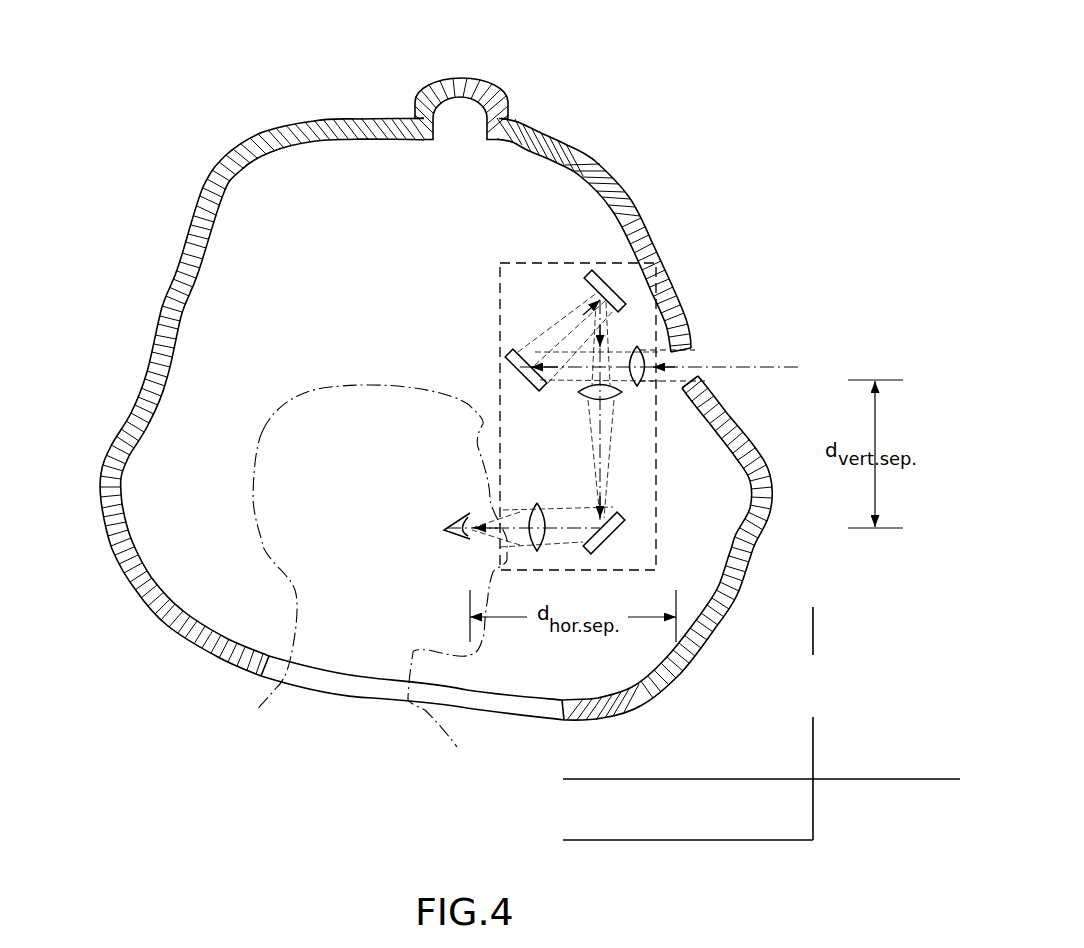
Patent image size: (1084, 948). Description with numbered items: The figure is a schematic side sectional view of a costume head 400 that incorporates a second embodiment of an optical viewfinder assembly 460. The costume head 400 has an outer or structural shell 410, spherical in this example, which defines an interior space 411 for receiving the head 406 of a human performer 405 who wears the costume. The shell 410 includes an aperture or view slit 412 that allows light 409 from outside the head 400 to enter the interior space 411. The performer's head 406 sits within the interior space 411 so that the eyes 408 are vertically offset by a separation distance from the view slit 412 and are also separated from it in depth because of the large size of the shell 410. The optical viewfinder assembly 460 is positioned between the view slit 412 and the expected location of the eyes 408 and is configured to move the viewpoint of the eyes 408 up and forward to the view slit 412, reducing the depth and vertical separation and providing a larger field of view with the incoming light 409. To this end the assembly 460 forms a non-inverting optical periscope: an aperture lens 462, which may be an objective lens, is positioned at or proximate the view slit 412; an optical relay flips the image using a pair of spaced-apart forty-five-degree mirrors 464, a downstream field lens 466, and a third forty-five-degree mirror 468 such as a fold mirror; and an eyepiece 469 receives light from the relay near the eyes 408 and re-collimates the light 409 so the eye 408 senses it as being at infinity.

The costume head 400 is at (190, 80).
The human performer 405 is at (242, 535).
The head of performer 406 is at (262, 432).
The eyes 408 is at (468, 523).
The light 409 is at (733, 372).
The shell 410 is at (170, 265).
The interior space 411 is at (230, 225).
The view slit 412 is at (698, 356).
The optical viewfinder assembly 460 is at (610, 263).
The aperture lens 462 is at (637, 346).
The 45-degree mirrors 464 is at (583, 280).
The field lens 466 is at (612, 406).
The mirror 468 is at (632, 513).
The eyepiece 469 is at (543, 549).